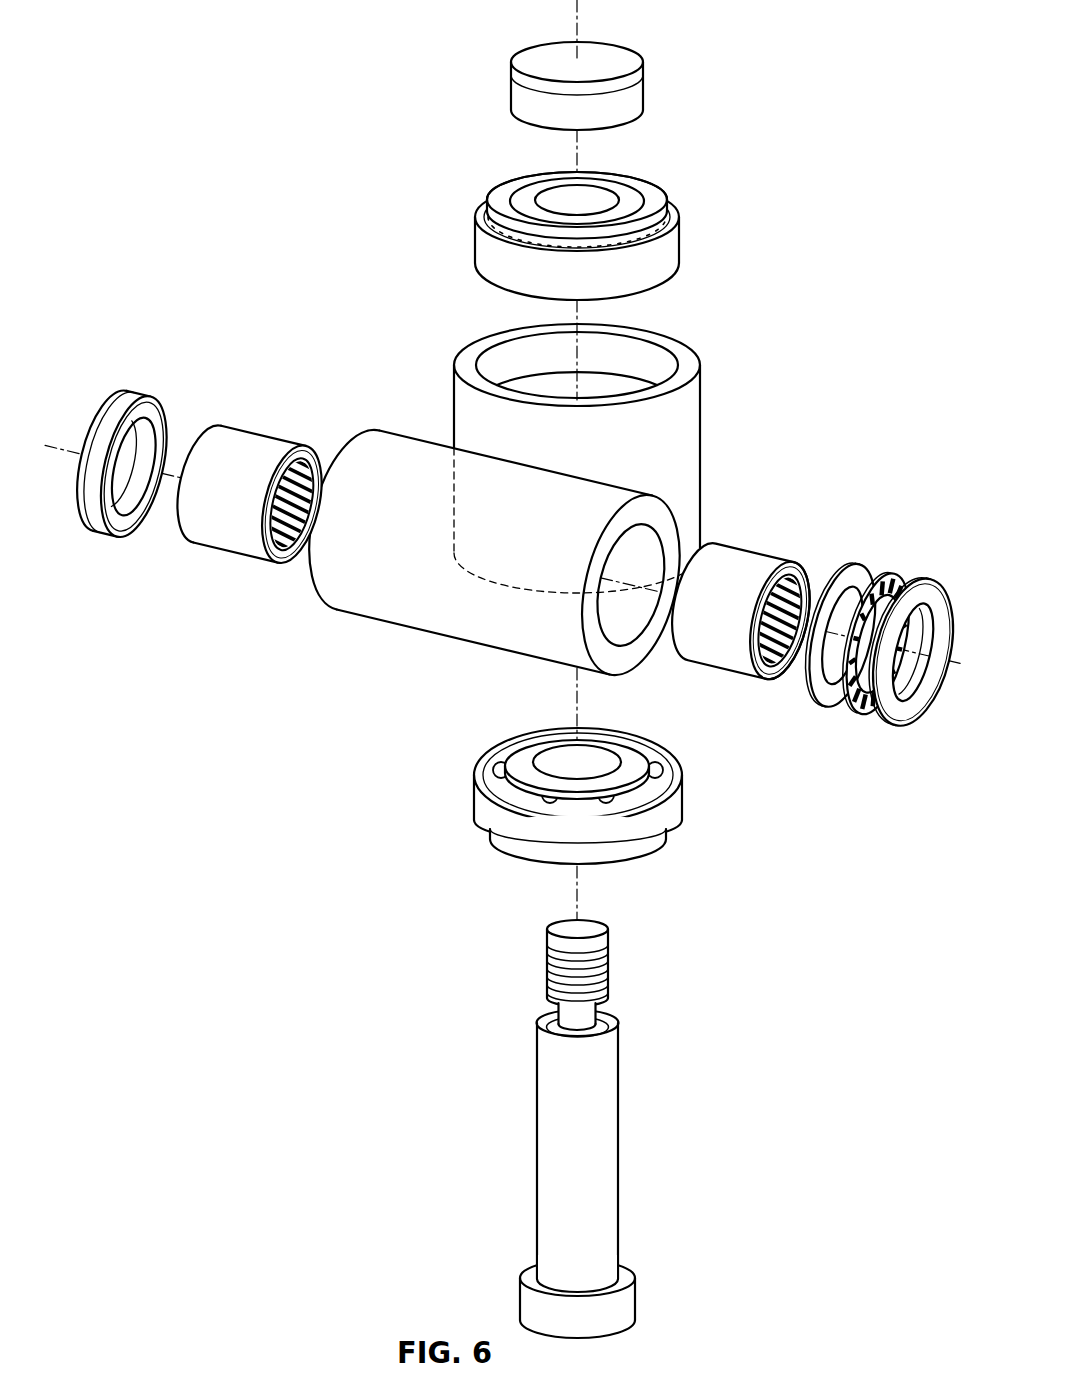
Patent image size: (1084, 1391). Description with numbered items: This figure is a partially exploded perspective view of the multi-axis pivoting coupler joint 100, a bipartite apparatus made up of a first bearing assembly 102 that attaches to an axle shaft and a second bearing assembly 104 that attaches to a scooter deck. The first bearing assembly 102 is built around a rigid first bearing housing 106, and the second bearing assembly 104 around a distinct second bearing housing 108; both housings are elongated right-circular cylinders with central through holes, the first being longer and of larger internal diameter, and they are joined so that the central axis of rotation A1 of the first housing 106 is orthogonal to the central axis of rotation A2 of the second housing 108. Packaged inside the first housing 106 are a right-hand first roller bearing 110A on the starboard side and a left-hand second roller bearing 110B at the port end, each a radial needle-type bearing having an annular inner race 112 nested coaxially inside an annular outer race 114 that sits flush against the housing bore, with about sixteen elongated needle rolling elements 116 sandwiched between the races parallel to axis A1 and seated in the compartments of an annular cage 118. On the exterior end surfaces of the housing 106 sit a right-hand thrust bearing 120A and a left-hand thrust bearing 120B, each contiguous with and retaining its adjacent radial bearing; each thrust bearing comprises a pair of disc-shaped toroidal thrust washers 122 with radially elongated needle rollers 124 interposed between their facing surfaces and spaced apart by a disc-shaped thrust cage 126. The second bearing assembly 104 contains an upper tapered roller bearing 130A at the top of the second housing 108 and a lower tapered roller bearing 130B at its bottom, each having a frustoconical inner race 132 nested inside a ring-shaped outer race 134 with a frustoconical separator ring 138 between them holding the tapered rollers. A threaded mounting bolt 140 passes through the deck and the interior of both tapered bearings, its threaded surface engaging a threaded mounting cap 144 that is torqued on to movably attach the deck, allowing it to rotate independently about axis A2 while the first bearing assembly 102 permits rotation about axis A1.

The pivoting coupler joint 100 is at (504, 669).
The first bearing assembly 102 is at (494, 477).
The second bearing assembly 104 is at (571, 477).
The first bearing housing 106 is at (423, 462).
The second bearing housing 108 is at (688, 424).
The first roller bearing 110A is at (267, 471).
The second roller bearing 110B is at (753, 516).
The inner race 112 is at (313, 477).
The outer race 114 is at (223, 448).
The rolling elements 116 is at (254, 507).
The annular cage 118 is at (318, 515).
The third roller bearing 120A is at (116, 366).
The fourth roller bearing 120B is at (862, 625).
The thrust washers 122 is at (838, 593).
The needle rollers 124 is at (853, 657).
The thrust cage 126 is at (907, 670).
The fifth roller bearing 130A is at (539, 206).
The sixth roller bearing 130B is at (448, 784).
The inner race 132 is at (625, 192).
The outer race 134 is at (674, 222).
The separator ring 138 is at (647, 210).
The mounting bolt 140 is at (548, 1135).
The mounting cap 144 is at (510, 86).
The central axis of rotation A1 is at (53, 448).
The central axis of rotation A2 is at (578, 15).